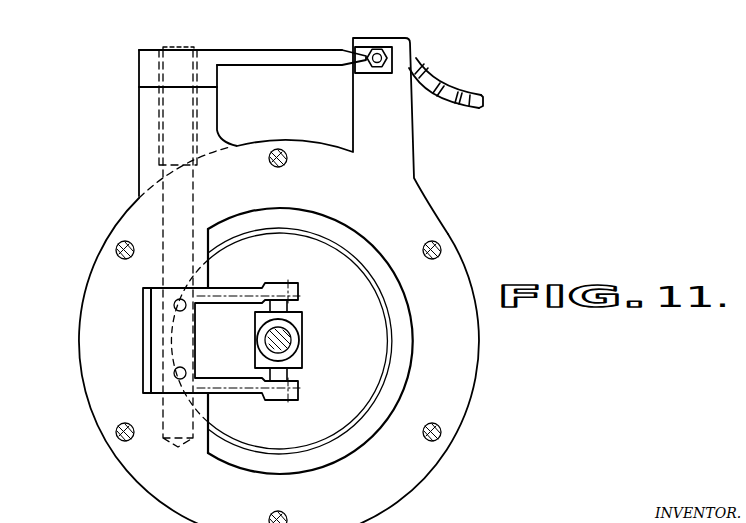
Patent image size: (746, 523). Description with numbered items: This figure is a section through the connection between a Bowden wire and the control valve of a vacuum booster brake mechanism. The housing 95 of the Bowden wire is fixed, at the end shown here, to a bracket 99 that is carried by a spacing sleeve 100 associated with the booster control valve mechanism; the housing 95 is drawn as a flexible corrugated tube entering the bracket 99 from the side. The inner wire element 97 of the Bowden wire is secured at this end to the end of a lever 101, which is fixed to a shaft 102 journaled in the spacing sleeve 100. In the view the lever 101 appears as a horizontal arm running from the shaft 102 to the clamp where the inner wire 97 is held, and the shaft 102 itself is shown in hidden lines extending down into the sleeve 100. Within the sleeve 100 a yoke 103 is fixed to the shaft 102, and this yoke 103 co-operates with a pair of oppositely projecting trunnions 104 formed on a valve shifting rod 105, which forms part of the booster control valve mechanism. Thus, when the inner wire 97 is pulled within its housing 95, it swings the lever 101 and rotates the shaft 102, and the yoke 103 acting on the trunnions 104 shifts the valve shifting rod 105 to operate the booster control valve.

The housing of the Bowden wire 95 is at (444, 82).
The inner wire element of the Bowden wire 97 is at (378, 48).
The bracket 99 is at (408, 134).
The spacing sleeve 100 is at (456, 266).
The lever 101 is at (276, 62).
The shaft 102 is at (174, 49).
The yoke 103 is at (245, 398).
The trunnions 104 is at (288, 305).
The valve shifting rod 105 is at (294, 333).